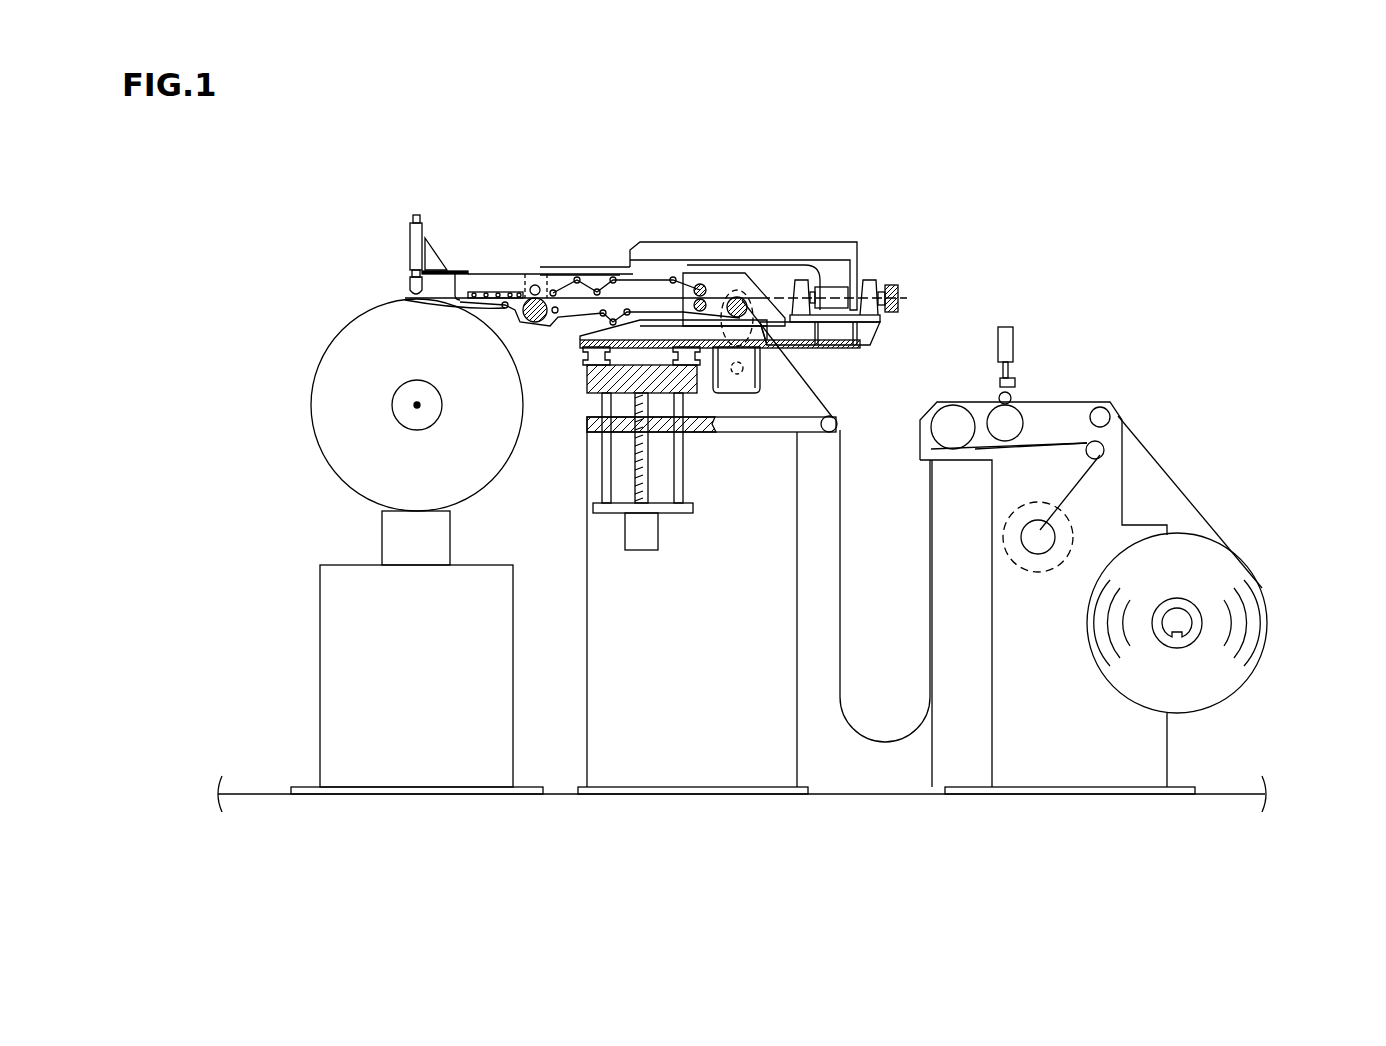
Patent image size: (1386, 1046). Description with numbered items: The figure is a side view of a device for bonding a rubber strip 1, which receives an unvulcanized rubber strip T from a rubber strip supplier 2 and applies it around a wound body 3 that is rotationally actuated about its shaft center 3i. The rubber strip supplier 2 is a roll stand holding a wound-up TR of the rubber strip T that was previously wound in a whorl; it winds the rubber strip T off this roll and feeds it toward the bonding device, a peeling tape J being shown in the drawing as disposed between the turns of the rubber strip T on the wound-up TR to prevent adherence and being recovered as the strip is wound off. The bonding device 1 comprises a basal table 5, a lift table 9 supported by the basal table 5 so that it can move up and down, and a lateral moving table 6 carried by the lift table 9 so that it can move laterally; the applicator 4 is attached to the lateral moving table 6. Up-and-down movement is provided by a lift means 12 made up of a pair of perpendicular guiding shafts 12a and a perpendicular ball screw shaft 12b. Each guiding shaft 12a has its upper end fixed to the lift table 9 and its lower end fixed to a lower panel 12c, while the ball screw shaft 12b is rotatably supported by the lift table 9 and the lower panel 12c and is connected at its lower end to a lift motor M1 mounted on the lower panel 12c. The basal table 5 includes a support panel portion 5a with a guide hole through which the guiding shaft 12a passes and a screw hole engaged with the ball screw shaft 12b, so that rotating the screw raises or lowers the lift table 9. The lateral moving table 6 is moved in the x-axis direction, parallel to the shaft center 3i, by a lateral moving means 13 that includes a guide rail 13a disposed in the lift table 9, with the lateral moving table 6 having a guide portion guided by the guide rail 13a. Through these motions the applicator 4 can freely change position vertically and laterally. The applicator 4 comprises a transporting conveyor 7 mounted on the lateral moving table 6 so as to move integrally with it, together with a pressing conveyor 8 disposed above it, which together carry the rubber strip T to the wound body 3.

The device for bonding a rubber strip 1 is at (878, 362).
The rubber strip supplier 2 is at (1143, 398).
The wound body 3 is at (352, 345).
The shaft center 3i is at (417, 408).
The applicator 4 is at (886, 246).
The basal table 5 is at (695, 755).
The support panel portion 5a is at (753, 430).
The lateral moving table 6 is at (648, 342).
The transporting conveyor 7 is at (578, 318).
The pressing conveyor 8 is at (565, 283).
The lift table 9 is at (625, 295).
The lift means 12 is at (558, 513).
The guiding shaft 12a is at (602, 450).
The ball screw shaft 12b is at (635, 470).
The lower panel 12c is at (613, 512).
The lateral moving means 13 is at (702, 362).
The guide rail 13a is at (673, 358).
The joint roller J is at (1053, 440).
The lift motor M1 is at (642, 540).
The rubber strip T is at (842, 640).
The wound-up TR is at (1252, 605).